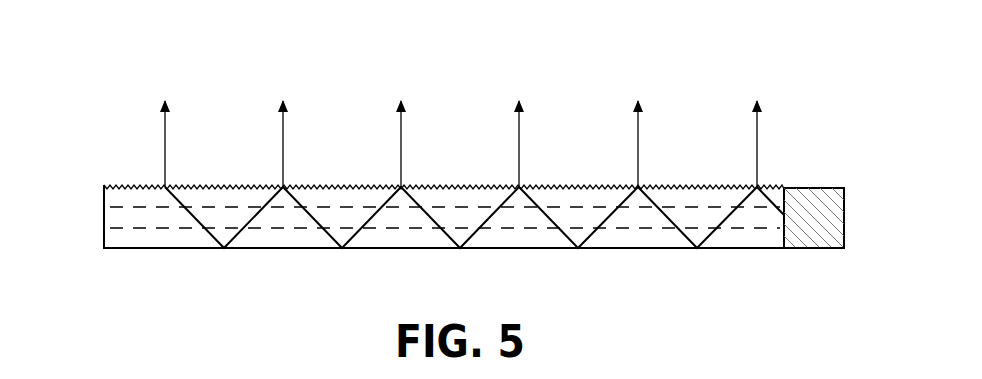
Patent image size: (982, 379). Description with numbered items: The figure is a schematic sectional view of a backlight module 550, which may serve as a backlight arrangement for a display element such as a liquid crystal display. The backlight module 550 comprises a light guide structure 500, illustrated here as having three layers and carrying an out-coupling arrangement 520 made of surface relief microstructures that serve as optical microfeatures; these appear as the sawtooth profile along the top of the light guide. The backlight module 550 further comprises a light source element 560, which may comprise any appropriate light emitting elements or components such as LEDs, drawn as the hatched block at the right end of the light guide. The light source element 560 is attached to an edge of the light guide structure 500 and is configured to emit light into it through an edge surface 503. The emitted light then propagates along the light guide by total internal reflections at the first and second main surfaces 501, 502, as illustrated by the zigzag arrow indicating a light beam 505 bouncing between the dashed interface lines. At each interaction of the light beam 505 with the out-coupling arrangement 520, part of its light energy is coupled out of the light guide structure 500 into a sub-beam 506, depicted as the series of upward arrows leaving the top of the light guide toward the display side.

The light guide structure 500 is at (124, 147).
The first main surface 501 is at (623, 250).
The second main surface 502 is at (620, 187).
The edge surface 503 is at (800, 232).
The light beam 505 is at (712, 233).
The sub-beam 506 is at (402, 138).
The out-coupling arrangement 520 is at (231, 178).
The backlight module 550 is at (178, 277).
The light source element 560 is at (808, 207).